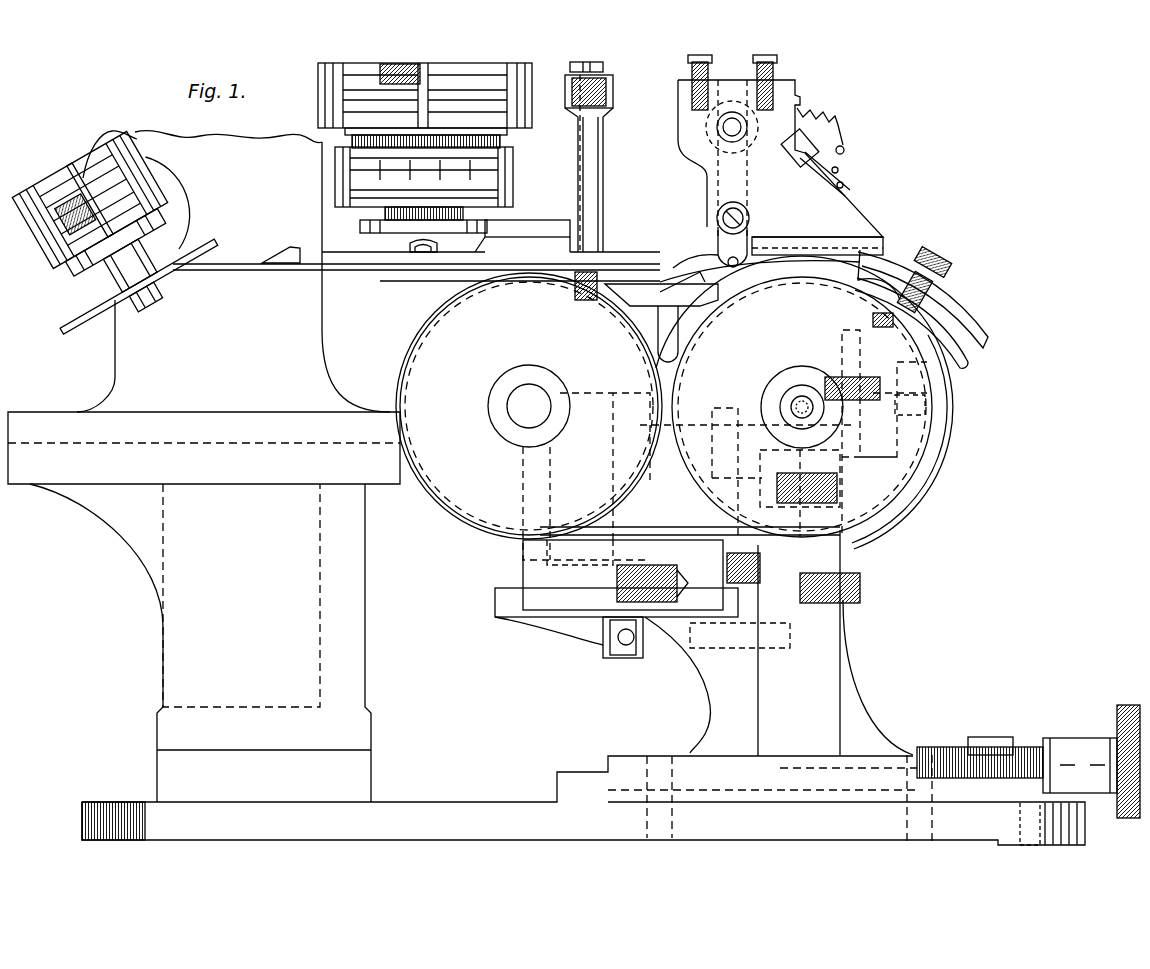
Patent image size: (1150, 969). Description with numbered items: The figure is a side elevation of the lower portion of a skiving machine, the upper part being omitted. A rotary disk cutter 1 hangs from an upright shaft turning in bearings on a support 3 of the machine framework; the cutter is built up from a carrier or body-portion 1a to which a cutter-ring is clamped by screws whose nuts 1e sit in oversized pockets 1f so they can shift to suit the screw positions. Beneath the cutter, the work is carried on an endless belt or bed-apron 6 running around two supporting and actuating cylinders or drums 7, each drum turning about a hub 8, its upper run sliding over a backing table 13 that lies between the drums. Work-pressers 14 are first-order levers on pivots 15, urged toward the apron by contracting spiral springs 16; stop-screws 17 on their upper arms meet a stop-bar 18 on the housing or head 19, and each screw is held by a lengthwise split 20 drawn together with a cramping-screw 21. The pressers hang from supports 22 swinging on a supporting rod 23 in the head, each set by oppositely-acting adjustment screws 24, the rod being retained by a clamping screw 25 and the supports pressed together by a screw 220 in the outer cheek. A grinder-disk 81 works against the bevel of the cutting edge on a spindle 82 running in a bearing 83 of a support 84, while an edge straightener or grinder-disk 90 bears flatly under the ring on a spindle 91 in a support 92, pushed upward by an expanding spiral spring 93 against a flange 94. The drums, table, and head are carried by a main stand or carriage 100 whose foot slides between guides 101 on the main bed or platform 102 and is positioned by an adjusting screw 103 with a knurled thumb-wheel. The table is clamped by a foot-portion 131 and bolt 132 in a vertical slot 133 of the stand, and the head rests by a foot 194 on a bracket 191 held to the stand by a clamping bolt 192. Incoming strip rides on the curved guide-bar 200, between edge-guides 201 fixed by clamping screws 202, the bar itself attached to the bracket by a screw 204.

The rotary disk cutter 1 is at (372, 272).
The carrier or body-portion 1a is at (295, 250).
The nuts 1e is at (412, 248).
The pockets 1f is at (437, 250).
The support 3 is at (320, 108).
The endless belt or bed-apron 6 is at (662, 280).
The supporting and actuating cylinders or drums 7 is at (430, 352).
The wheel hub 8 is at (798, 398).
The supporting or backing table 13 is at (635, 306).
The work-pressers 14 is at (688, 262).
The pivot 15 is at (745, 288).
The contracting spiral springs 16 is at (822, 128).
The stop-screws 17 is at (845, 188).
The stop-bar 18 is at (792, 158).
The housing or head of the presser-devices 19 is at (690, 150).
The split 20 is at (846, 150).
The cramping-screw 21 is at (840, 170).
The supports 22 is at (762, 250).
The supporting rod 23 is at (740, 132).
The adjustment screws 24 is at (690, 72).
The clamping screw 25 is at (712, 112).
The grinder-disk 81 is at (95, 325).
The spindle 82 is at (150, 300).
The bearing 83 is at (110, 128).
The support 84 is at (150, 198).
The edge straightener or grinder-disk 90 is at (590, 300).
The spindle 91 is at (575, 185).
The support 92 is at (560, 222).
The expanding spiral spring 93 is at (606, 95).
The flange 94 is at (603, 66).
The main stand or carriage 100 is at (850, 650).
The guides 101 is at (572, 772).
The main bed or platform 102 is at (462, 808).
The adjusting screw 103 is at (1025, 745).
The foot-portion 131 is at (722, 420).
The bolt 132 is at (838, 488).
The vertical slot 133 is at (775, 478).
The bracket 191 is at (860, 285).
The clamping bolt 192 is at (920, 410).
The foot 194 is at (880, 237).
The guide-bar 200 is at (975, 362).
The edge-guides 201 is at (985, 340).
The clamping screws 202 is at (945, 255).
The screw 204 is at (935, 310).
The screw 220 is at (718, 212).